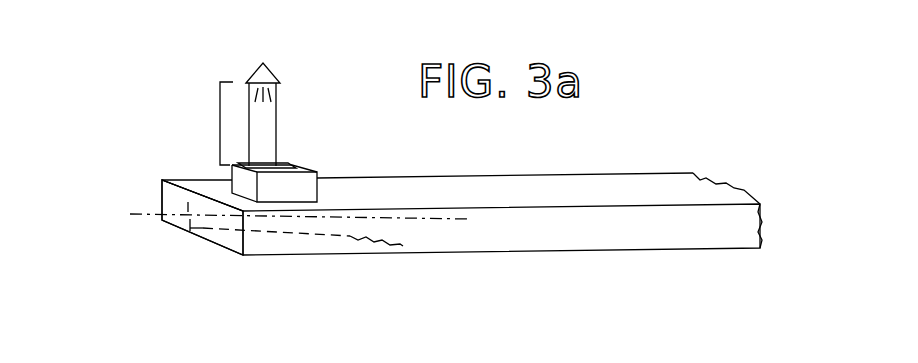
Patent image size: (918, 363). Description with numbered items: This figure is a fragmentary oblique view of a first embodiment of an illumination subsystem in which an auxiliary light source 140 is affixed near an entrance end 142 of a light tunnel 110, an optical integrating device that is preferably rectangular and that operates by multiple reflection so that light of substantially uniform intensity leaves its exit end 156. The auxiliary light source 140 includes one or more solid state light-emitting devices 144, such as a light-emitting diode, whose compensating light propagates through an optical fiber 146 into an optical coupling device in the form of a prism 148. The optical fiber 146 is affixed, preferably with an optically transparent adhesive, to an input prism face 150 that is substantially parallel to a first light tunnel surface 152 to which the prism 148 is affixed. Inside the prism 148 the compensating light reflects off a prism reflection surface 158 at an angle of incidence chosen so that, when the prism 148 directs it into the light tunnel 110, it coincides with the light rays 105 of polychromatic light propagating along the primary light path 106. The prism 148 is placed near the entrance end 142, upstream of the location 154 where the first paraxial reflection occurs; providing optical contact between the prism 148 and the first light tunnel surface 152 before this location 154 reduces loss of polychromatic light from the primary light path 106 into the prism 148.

The light rays 105 is at (190, 205).
The primary light path 106 is at (427, 220).
The light tunnel 110 is at (657, 235).
The auxiliary light source 140 is at (218, 110).
The entrance end 142 is at (228, 238).
The solid state light-emitting device 144 is at (272, 68).
The optical fiber 146 is at (277, 128).
The prism 148 is at (233, 163).
The input prism face 150 is at (293, 165).
The first light tunnel surface 152 is at (575, 190).
The location of first paraxial reflection 154 is at (400, 246).
The exit end 156 is at (705, 192).
The prism reflection surface 158 is at (243, 181).